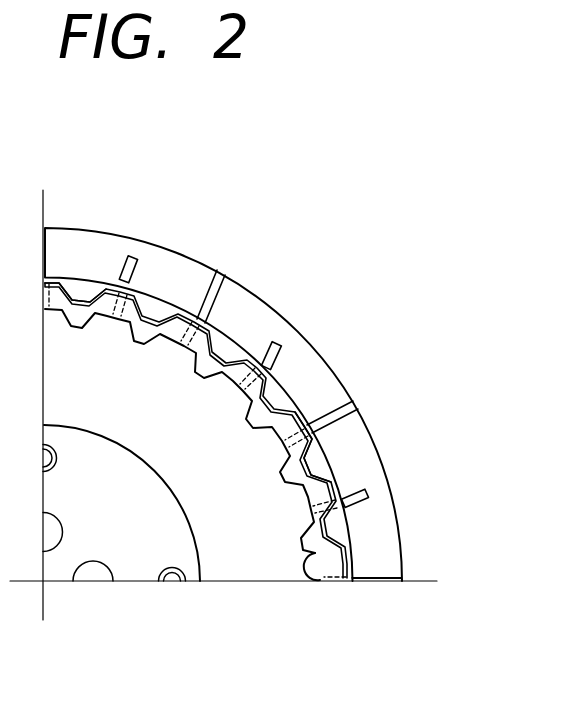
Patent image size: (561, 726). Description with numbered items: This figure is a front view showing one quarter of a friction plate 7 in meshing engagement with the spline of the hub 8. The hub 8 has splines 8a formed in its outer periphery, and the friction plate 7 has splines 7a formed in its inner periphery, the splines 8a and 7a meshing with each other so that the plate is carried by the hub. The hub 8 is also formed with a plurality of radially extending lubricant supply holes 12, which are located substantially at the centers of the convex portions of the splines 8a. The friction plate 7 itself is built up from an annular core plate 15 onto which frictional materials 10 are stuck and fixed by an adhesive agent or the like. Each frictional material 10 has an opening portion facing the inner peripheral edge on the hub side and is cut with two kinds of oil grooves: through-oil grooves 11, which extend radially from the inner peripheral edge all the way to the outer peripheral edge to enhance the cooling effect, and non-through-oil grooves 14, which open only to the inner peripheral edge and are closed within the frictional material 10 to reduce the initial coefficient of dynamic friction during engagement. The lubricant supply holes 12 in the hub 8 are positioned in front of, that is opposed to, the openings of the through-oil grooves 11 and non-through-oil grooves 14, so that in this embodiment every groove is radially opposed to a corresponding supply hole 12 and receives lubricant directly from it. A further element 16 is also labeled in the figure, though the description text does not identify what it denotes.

The friction plate 7 is at (301, 305).
The spline 7a is at (308, 470).
The hub 8 is at (263, 566).
The spline 8a is at (320, 580).
The frictional material 10 is at (362, 427).
The through-oil groove 11 is at (227, 277).
The lubricant supply hole 12 is at (320, 513).
The non-through-oil groove 14 is at (134, 266).
The annular core plate 15 is at (80, 290).
The sheet member 16 is at (286, 399).